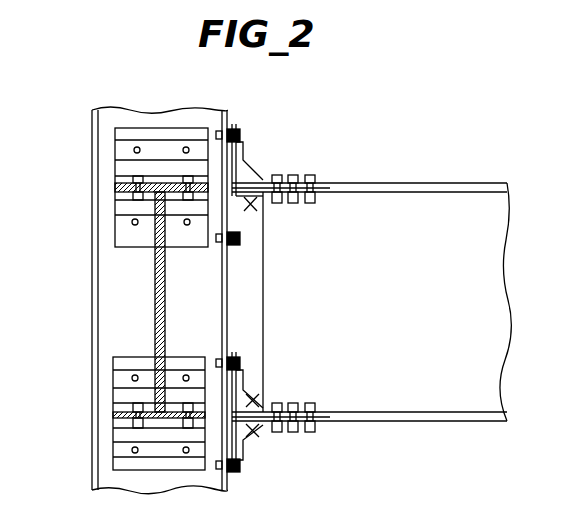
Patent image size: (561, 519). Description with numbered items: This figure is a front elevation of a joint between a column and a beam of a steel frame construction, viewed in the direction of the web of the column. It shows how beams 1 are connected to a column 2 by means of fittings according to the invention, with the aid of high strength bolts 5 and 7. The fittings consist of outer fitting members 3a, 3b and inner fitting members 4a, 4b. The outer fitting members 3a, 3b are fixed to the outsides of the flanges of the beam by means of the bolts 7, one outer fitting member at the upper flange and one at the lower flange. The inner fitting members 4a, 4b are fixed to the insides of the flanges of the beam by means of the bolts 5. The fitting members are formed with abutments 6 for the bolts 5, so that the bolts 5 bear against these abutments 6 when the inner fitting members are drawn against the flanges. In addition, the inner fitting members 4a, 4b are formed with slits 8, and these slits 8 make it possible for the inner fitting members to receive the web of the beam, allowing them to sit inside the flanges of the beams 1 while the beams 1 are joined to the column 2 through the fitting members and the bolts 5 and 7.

The beam 1 is at (416, 195).
The column 2 is at (214, 118).
The outer fitting member 3a is at (255, 176).
The outer fitting member 3b is at (256, 428).
The inner fitting member 4a is at (262, 198).
The inner fitting member 4b is at (263, 392).
The high strength bolts 5 is at (186, 147).
The abutments 6 is at (244, 140).
The high strength bolts 7 is at (292, 177).
The slits 8 is at (155, 297).